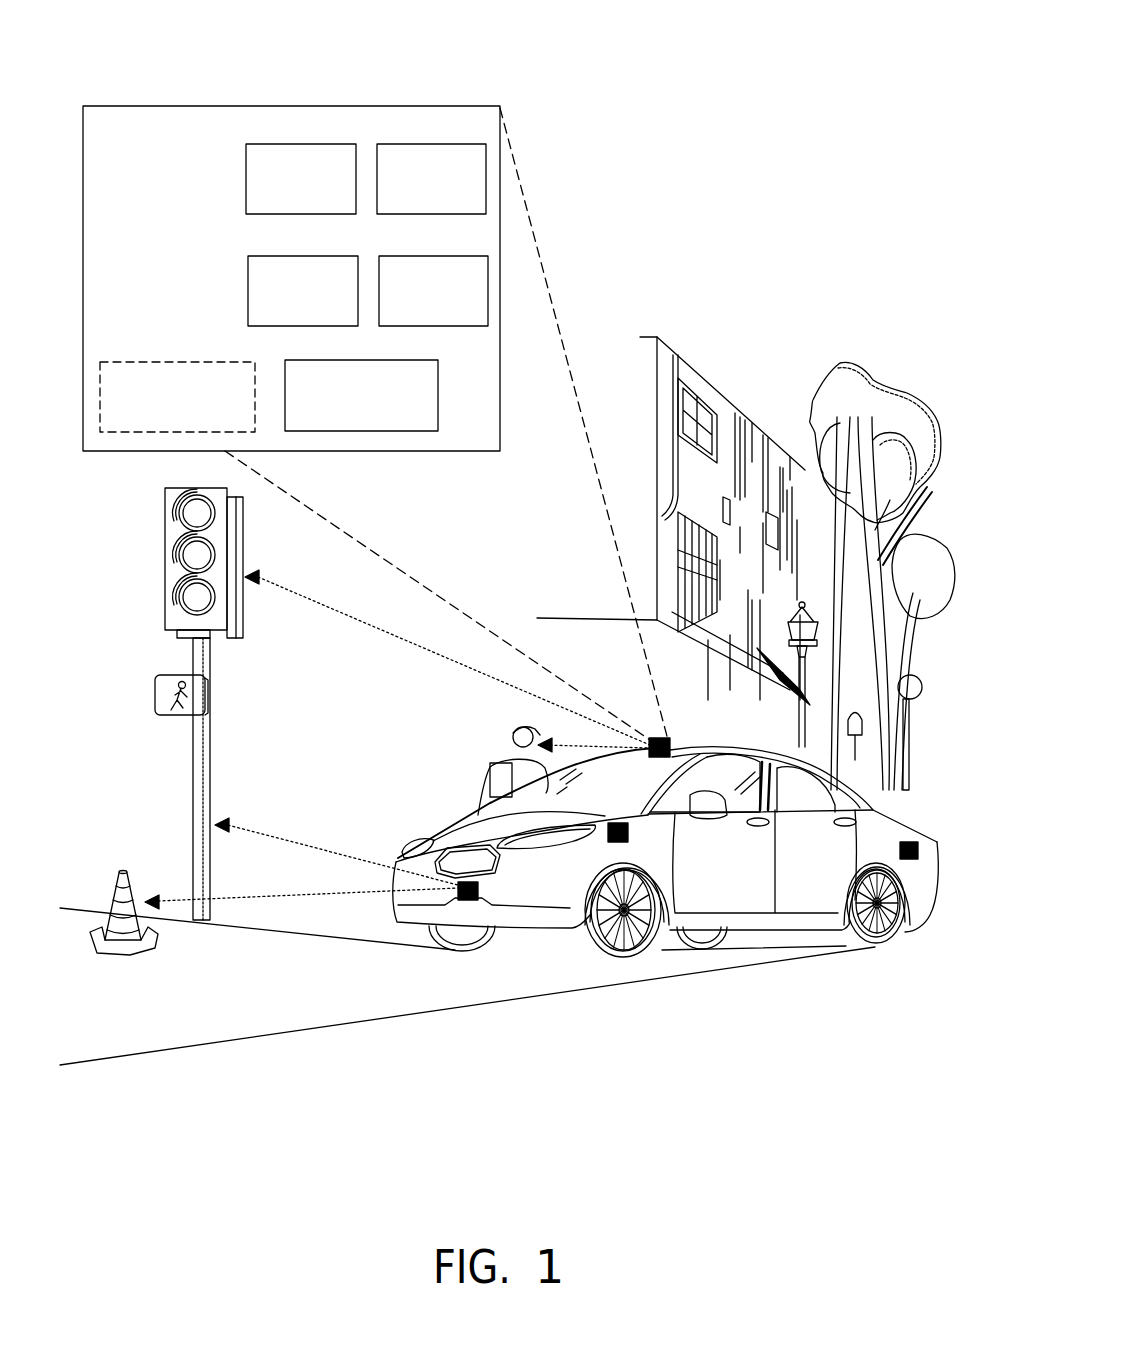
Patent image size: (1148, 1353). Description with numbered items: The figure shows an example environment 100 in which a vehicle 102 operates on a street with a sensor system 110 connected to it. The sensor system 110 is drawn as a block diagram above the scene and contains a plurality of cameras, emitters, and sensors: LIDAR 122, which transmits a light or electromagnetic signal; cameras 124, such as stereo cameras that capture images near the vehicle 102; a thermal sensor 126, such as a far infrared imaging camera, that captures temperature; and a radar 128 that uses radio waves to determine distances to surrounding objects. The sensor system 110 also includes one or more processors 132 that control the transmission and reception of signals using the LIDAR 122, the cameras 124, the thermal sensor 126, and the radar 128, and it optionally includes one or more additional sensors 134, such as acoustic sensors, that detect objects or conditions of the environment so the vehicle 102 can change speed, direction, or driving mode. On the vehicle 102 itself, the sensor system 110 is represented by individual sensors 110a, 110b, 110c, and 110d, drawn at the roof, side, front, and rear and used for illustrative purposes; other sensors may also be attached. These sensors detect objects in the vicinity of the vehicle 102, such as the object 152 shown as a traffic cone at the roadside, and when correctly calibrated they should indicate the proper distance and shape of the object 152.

The environment 100 is at (853, 42).
The sensor system 110 is at (451, 106).
The LIDAR 122 is at (437, 144).
The cameras 124 is at (283, 144).
The thermal sensor 126 is at (297, 256).
The radar 128 is at (437, 256).
The processors 132 is at (378, 360).
The additional sensors 134 is at (192, 362).
The vehicle 102 is at (437, 836).
The sensor 110a is at (662, 740).
The sensor 110b is at (615, 823).
The sensor 110c is at (480, 897).
The sensor 110d is at (928, 836).
The object 152 is at (128, 953).